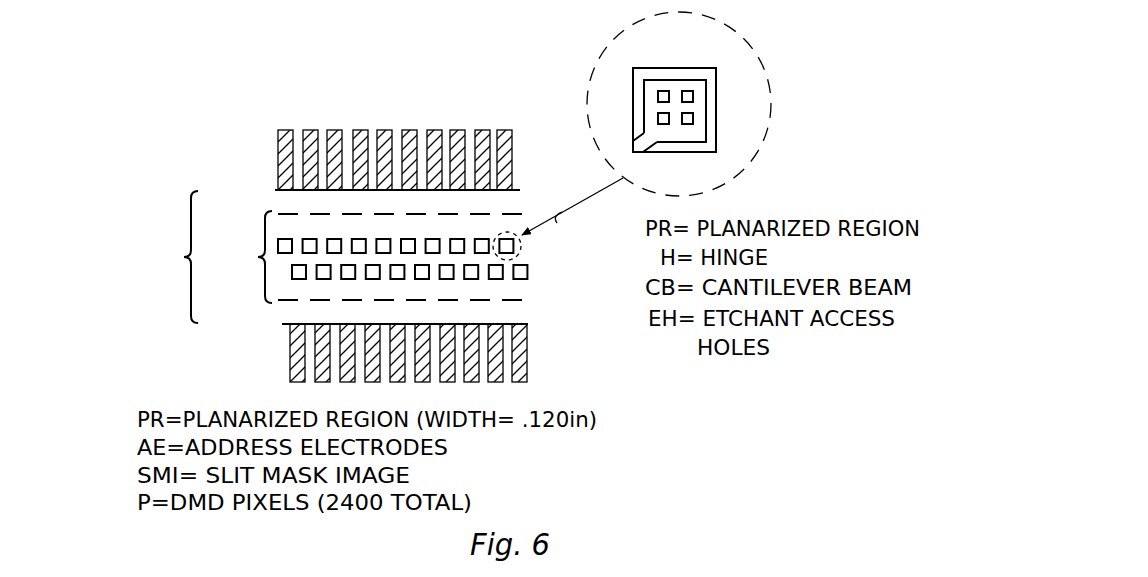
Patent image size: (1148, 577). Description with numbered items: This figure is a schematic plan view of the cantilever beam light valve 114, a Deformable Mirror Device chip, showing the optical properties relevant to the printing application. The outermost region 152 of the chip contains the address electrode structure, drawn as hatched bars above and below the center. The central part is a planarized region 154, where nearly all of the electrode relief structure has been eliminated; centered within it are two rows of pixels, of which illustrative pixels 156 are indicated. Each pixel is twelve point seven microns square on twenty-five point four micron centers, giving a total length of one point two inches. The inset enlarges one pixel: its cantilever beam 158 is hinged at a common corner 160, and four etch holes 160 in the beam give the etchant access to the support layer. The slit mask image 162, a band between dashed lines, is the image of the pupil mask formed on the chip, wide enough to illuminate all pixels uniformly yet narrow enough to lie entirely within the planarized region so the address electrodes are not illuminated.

The cantilever beam light valve 114 is at (156, 133).
The outermost region 152 is at (277, 157).
The planarized region 154 is at (600, 60).
The pixels 156 is at (504, 278).
The cantilever beams 158 is at (708, 45).
The common corner / etch holes 160 is at (695, 97).
The slit mask image 162 is at (255, 258).